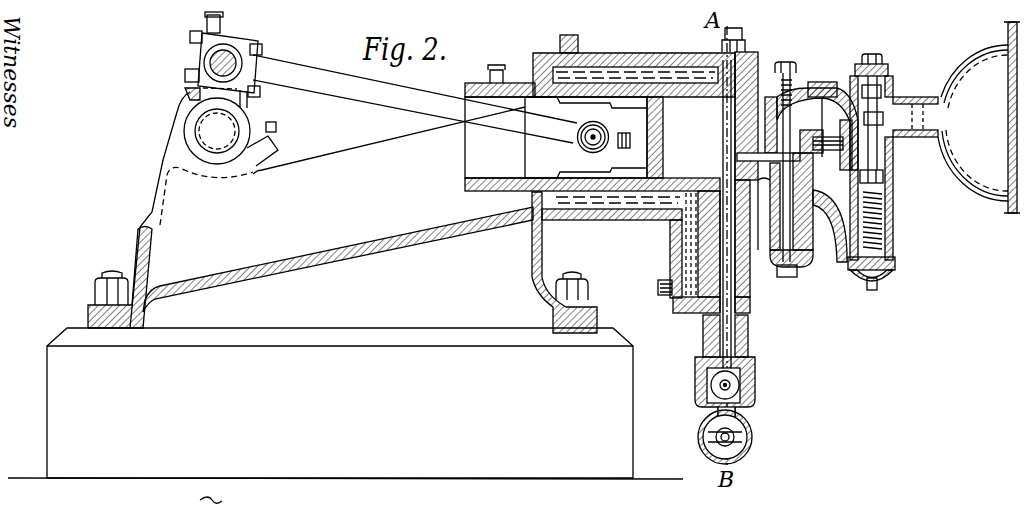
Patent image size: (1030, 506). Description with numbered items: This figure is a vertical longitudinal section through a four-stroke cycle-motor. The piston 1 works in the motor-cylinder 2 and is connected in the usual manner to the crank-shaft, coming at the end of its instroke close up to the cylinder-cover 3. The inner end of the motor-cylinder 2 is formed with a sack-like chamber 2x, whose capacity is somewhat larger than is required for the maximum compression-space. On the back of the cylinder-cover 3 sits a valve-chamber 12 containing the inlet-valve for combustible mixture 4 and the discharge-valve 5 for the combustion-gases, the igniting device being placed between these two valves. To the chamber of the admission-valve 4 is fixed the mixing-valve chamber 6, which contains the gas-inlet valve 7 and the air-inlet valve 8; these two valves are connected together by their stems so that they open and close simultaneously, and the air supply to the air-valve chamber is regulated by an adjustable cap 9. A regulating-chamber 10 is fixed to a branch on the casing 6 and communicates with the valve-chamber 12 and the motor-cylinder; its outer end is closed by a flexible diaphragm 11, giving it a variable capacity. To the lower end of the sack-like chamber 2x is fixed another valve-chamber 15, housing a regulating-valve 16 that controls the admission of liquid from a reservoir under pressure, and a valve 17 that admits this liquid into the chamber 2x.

The piston 1 is at (443, 104).
The motor-cylinder 2 is at (632, 170).
The sack-like chamber 2x is at (732, 256).
The cylinder-cover 3 is at (734, 123).
The inlet-valve for combustible mixture 4 is at (823, 120).
The discharge-valve 5 is at (826, 186).
The mixing-valve chamber 6 is at (892, 137).
The gas-inlet valve 7 is at (886, 90).
The air-inlet valve 8 is at (894, 178).
The adjustable cap 9 is at (880, 280).
The regulating-chamber 10 is at (973, 123).
The flexible diaphragm 11 is at (1008, 210).
The valve-chamber 12 is at (737, 154).
The valve-chamber 15 is at (742, 350).
The regulating-valve 16 is at (738, 438).
The valve for the admission of liquid 17 is at (738, 413).